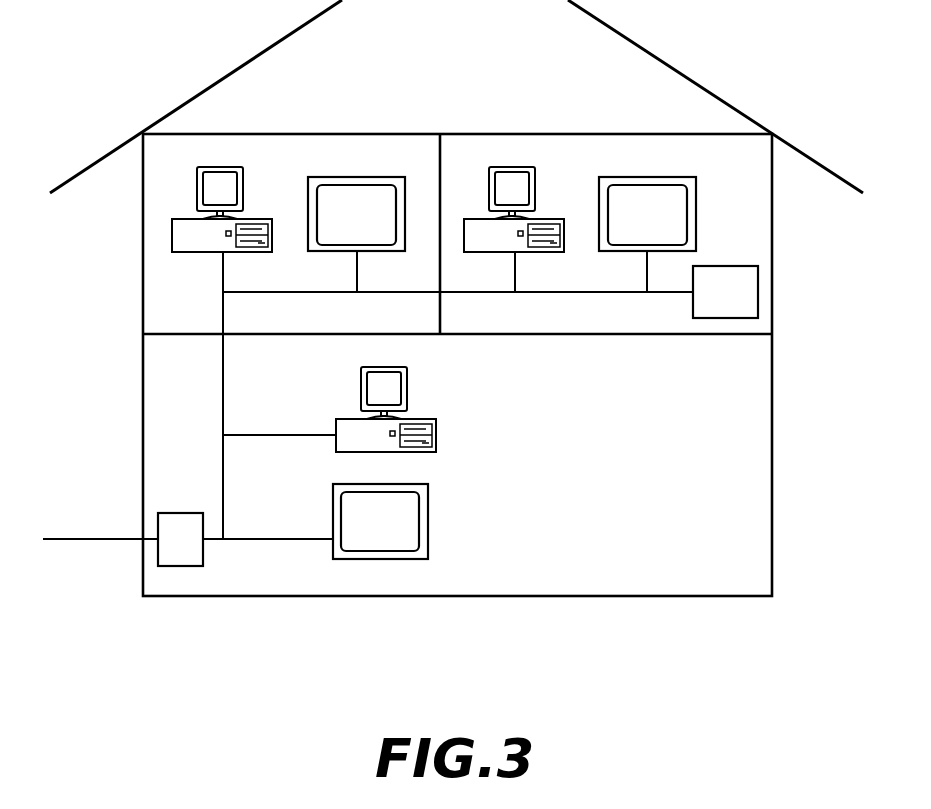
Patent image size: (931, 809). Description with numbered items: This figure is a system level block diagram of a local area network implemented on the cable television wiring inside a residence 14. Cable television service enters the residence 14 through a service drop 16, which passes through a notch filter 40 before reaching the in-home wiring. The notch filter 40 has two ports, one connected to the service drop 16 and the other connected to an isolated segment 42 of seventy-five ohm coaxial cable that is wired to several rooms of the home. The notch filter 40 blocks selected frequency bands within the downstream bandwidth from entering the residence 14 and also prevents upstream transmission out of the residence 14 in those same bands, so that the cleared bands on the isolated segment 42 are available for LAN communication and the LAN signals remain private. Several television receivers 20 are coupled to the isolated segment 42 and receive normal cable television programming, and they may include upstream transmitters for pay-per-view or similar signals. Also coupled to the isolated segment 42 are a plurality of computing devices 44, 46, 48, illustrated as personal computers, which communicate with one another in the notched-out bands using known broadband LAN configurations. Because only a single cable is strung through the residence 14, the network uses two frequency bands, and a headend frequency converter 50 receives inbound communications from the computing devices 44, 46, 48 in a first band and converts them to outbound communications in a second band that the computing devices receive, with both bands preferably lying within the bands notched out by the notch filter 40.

The residence 14 is at (615, 597).
The service drop 16 is at (103, 538).
The television receivers 20 is at (369, 176).
The notch filter 40 is at (188, 568).
The isolated segment 42 is at (224, 378).
The computing device 44 is at (406, 393).
The computing device 46 is at (228, 165).
The computing device 48 is at (519, 165).
The headend frequency converter 50 is at (738, 266).